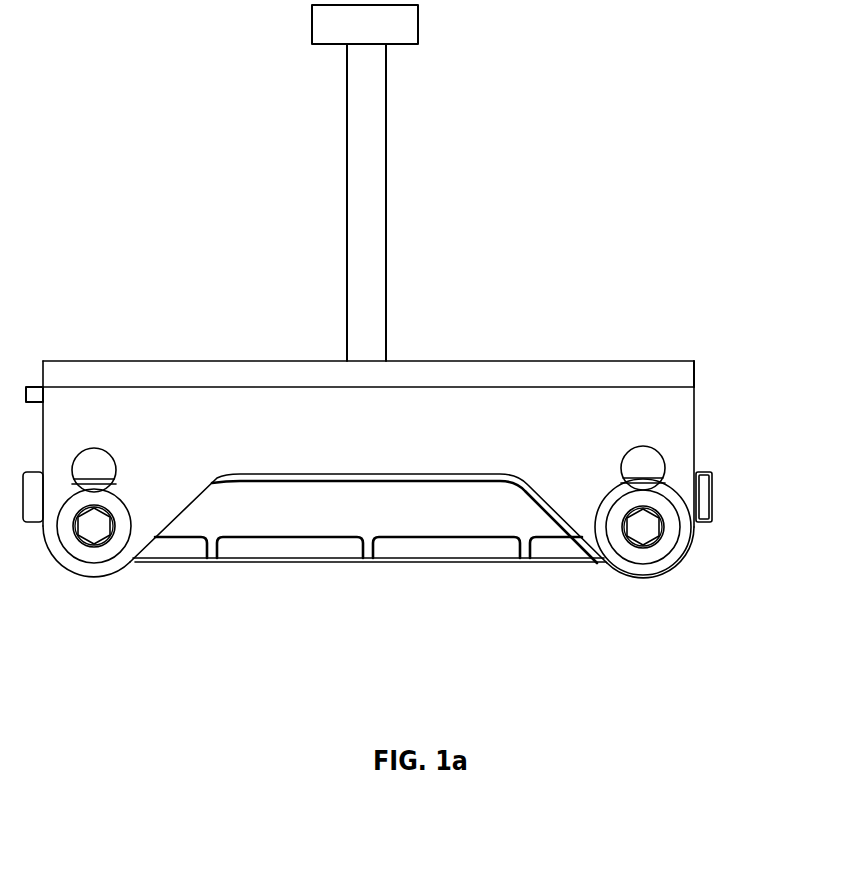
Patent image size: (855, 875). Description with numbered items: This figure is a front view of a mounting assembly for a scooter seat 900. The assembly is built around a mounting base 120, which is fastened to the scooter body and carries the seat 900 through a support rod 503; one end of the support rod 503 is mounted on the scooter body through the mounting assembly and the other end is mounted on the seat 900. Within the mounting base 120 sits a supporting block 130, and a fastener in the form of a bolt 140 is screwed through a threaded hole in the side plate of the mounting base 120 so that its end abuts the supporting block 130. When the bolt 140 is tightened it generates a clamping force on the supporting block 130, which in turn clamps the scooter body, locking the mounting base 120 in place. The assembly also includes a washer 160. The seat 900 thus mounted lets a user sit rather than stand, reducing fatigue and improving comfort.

The scooter seat 900 is at (312, 25).
The support rod 503 is at (370, 223).
The mounting base 120 is at (583, 415).
The supporting block 130 is at (397, 507).
The bolt 140 is at (643, 527).
The washer 160 is at (680, 512).